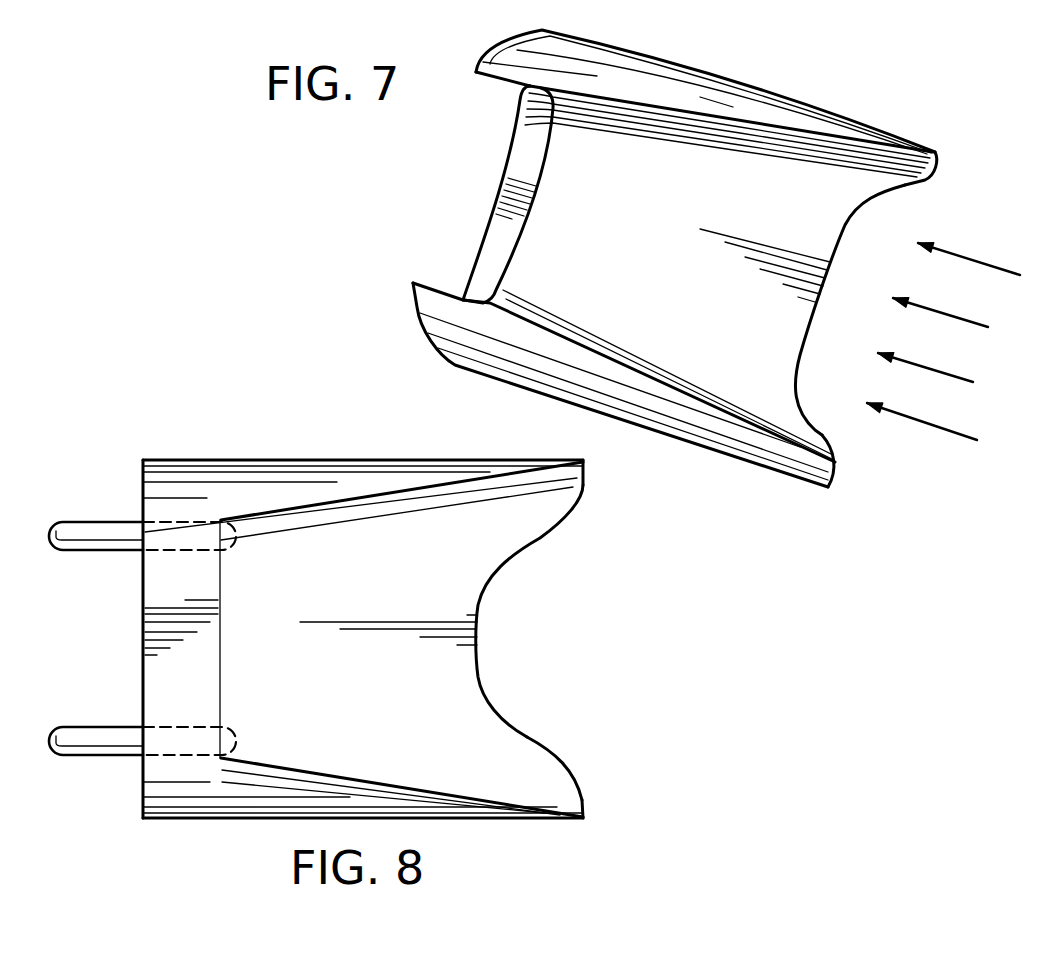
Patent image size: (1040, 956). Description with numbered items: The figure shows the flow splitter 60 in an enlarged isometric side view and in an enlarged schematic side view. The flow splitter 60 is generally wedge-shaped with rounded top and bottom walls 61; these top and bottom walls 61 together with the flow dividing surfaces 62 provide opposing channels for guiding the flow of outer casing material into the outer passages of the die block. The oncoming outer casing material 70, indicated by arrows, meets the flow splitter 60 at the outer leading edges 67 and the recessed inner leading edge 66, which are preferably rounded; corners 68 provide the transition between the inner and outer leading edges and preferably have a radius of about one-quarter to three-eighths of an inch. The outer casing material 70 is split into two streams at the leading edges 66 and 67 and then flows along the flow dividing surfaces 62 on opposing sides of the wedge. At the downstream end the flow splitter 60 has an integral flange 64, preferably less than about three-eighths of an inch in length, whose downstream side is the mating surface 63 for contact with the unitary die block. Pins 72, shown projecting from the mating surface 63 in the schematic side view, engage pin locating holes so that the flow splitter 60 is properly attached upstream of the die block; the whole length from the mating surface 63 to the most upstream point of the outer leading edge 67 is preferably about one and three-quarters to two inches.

In FIG. 7, the flow splitter 60 is at (426, 367).
In FIG. 8, the flow splitter 60 is at (277, 442).
In FIG. 7, the top and bottom walls 61 is at (688, 92).
In FIG. 8, the top and bottom walls 61 is at (187, 468).
In FIG. 7, the flow dividing surfaces 62 is at (783, 205).
In FIG. 8, the flow dividing surfaces 62 is at (425, 678).
In FIG. 7, the mating surface 63 is at (490, 238).
In FIG. 8, the mating surface 63 is at (143, 593).
In FIG. 7, the integral flange 64 is at (528, 160).
In FIG. 8, the integral flange 64 is at (177, 688).
In FIG. 7, the recessed inner leading edge 66 is at (810, 330).
In FIG. 8, the recessed inner leading edge 66 is at (480, 623).
In FIG. 7, the outer leading edges 67 is at (928, 180).
In FIG. 8, the outer leading edges 67 is at (583, 487).
In FIG. 8, the corners 68 is at (513, 730).
In FIG. 7, the outer casing material 70 is at (963, 325).
In FIG. 8, the pins 72 is at (83, 522).